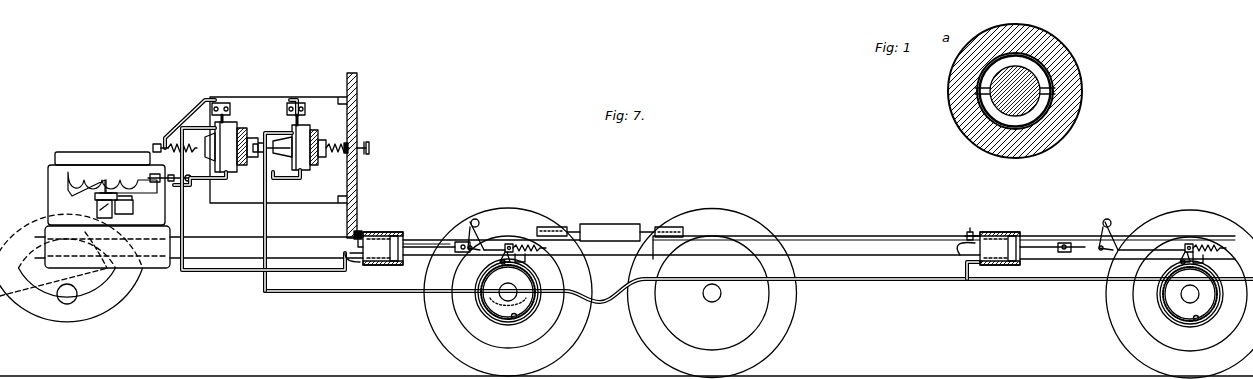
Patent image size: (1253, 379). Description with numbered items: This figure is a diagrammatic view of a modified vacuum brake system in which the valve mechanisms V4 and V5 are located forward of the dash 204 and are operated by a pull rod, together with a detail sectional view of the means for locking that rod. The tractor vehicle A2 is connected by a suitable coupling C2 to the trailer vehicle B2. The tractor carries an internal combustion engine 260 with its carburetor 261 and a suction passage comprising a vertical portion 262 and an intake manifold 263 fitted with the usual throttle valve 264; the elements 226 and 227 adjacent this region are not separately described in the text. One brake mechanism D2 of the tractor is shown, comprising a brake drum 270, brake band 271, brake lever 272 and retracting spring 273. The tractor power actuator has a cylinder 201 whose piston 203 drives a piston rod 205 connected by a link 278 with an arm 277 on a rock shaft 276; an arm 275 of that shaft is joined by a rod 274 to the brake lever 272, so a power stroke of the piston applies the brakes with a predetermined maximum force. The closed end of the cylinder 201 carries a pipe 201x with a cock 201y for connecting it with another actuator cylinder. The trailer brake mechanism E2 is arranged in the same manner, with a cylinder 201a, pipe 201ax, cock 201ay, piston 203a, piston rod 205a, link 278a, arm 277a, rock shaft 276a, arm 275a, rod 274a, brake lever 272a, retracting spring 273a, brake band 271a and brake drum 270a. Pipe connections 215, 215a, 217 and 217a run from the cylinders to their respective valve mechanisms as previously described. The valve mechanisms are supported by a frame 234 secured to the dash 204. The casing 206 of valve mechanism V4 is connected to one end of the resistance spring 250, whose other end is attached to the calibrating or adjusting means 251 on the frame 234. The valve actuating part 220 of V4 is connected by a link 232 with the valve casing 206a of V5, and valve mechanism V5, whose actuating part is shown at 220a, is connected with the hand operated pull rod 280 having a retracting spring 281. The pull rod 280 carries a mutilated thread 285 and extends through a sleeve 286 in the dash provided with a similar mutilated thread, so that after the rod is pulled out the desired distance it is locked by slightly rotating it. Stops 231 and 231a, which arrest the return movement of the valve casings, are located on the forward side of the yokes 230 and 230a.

In FIG. 7, the cylinder 201 is at (360, 240).
In FIG. 7, the pipe 201x is at (358, 231).
In FIG. 7, the cock 201y is at (345, 252).
In FIG. 7, the cylinder 201a is at (982, 233).
In FIG. 7, the pipe 201ax is at (970, 230).
In FIG. 7, the cock 201ay is at (962, 250).
In FIG. 7, the piston 203 is at (398, 233).
In FIG. 7, the piston 203a is at (1010, 262).
In FIG. 7, the dash 204 is at (357, 80).
In FIG. 7, the piston rod 205 is at (416, 246).
In FIG. 7, the piston rod 205a is at (1030, 246).
In FIG. 7, the casing 206 is at (190, 112).
In FIG. 7, the valve casing 206a is at (305, 102).
In FIG. 7, the pipe 215 is at (190, 270).
In FIG. 7, the pipe 215a is at (262, 226).
In FIG. 7, the pipe 217 is at (206, 182).
In FIG. 7, the pipe 217a is at (258, 180).
In FIG. 7, the valve actuating part 220 is at (228, 120).
In FIG. 7, the valve actuating part 220a is at (312, 128).
In FIG. 7, the valve 226 is at (144, 205).
In FIG. 7, the rod 227 is at (150, 176).
In FIG. 7, the yoke 230 is at (222, 116).
In FIG. 7, the yoke 230a is at (297, 118).
In FIG. 7, the stop 231 is at (218, 104).
In FIG. 7, the stop 231a is at (292, 103).
In FIG. 7, the link 232 is at (268, 145).
In FIG. 7, the frame 234 is at (256, 143).
In FIG. 7, the resistance spring 250 is at (172, 145).
In FIG. 7, the calibrating or adjusting means 251 is at (156, 144).
In FIG. 7, the internal combustion engine 260 is at (75, 165).
In FIG. 7, the carburetor 261 is at (120, 213).
In FIG. 7, the vertical portion 262 is at (100, 188).
In FIG. 7, the intake manifold 263 is at (72, 176).
In FIG. 7, the throttle valve 264 is at (97, 205).
In FIG. 7, the brake drum 270 is at (516, 318).
In FIG. 7, the brake drum 270a is at (1196, 321).
In FIG. 7, the brake band 271 is at (497, 313).
In FIG. 7, the brake band 271a is at (1165, 312).
In FIG. 7, the brake lever 272 is at (508, 252).
In FIG. 7, the brake lever 272a is at (1186, 250).
In FIG. 7, the retracting spring 273 is at (545, 236).
In FIG. 7, the retracting spring 273a is at (1210, 248).
In FIG. 7, the rod 274 is at (509, 243).
In FIG. 7, the rod 274a is at (1189, 243).
In FIG. 7, the arm 275 is at (495, 248).
In FIG. 7, the arm 275a is at (1140, 248).
In FIG. 7, the rock shaft 276 is at (471, 228).
In FIG. 7, the rock shaft 276a is at (1103, 230).
In FIG. 7, the arm 277 is at (473, 219).
In FIG. 7, the arm 277a is at (1103, 219).
In FIG. 7, the link 278 is at (457, 243).
In FIG. 7, the link 278a is at (1075, 250).
In FIG. 7, the pull rod 280 is at (370, 148).
In FIG. 1a, the pull rod 280 is at (1005, 100).
In FIG. 7, the retracting spring 281 is at (334, 152).
In FIG. 1a, the mutilated thread 285 is at (1040, 80).
In FIG. 7, the sleeve 286 is at (350, 146).
In FIG. 1a, the sleeve 286 is at (1040, 108).
In FIG. 7, the tractor vehicle A2 is at (320, 260).
In FIG. 7, the trailer vehicle B2 is at (830, 242).
In FIG. 7, the coupling C2 is at (612, 224).
In FIG. 7, the brake mechanisms D2 is at (470, 298).
In FIG. 7, the brake mechanisms E2 is at (1155, 290).
In FIG. 7, the valve mechanism V4 is at (235, 161).
In FIG. 7, the valve mechanism V5 is at (299, 160).